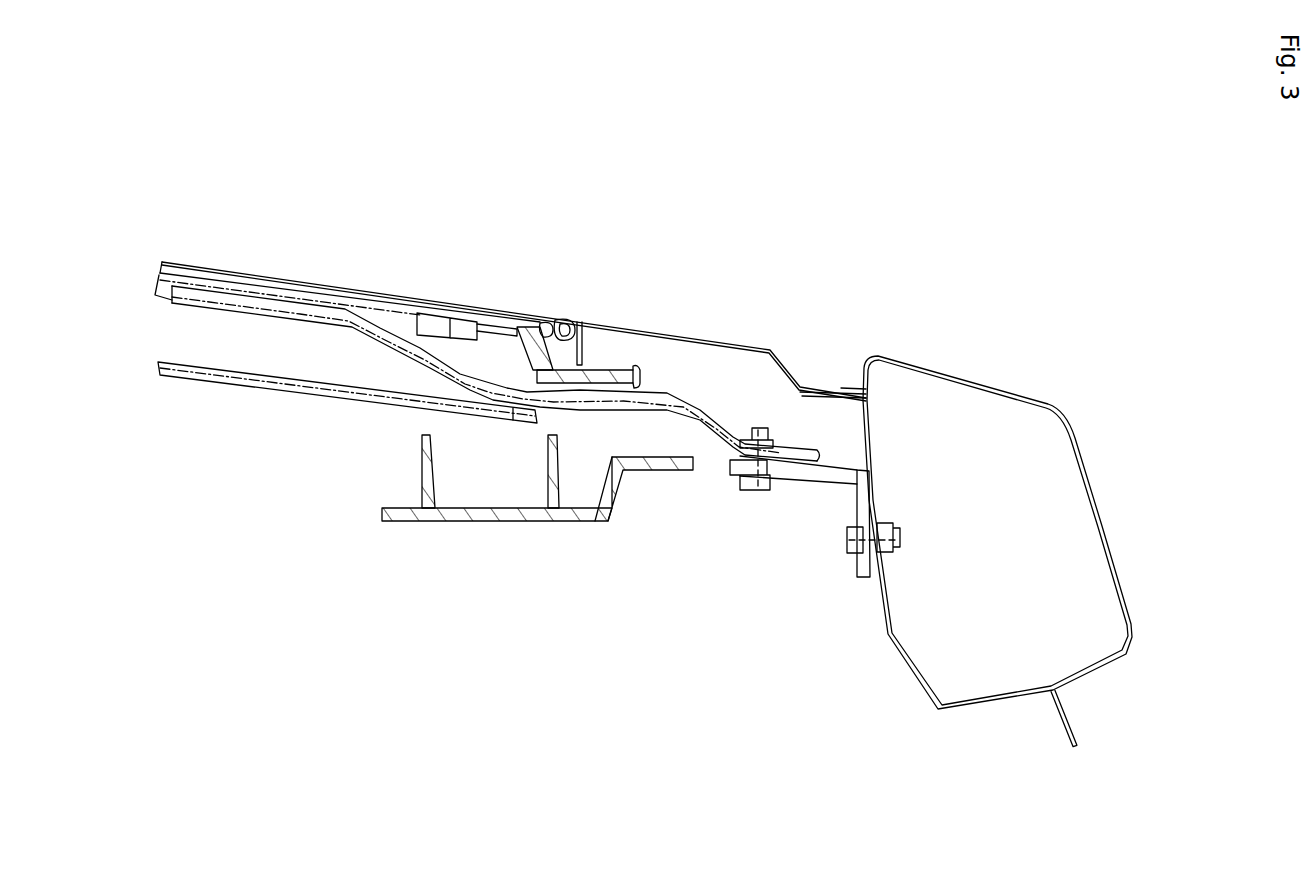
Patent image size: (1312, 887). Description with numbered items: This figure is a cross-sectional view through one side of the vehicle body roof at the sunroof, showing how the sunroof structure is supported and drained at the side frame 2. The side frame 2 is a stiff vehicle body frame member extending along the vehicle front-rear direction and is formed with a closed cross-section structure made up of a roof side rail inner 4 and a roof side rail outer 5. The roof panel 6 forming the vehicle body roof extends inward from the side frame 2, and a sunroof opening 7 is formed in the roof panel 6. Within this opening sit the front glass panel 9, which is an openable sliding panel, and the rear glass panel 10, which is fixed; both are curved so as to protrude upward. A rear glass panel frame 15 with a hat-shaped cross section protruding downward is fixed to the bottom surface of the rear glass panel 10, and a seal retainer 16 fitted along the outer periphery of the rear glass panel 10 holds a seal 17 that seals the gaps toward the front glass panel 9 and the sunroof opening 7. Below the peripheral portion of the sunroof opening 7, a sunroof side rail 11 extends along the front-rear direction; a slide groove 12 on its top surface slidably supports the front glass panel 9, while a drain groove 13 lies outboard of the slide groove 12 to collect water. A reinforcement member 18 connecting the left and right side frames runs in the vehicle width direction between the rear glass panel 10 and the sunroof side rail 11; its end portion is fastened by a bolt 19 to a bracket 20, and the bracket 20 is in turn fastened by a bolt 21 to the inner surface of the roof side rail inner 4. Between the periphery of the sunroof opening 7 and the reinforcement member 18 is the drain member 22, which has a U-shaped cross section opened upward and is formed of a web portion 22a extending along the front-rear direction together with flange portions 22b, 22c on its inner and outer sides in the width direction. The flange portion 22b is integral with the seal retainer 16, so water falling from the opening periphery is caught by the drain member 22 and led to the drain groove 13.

The side frame 2 is at (927, 368).
The roof side rail inner 4 is at (912, 676).
The roof side rail outer 5 is at (977, 390).
The roof panel 6 is at (735, 345).
The sunroof opening 7 is at (588, 348).
The front glass panel 9 is at (255, 382).
The rear glass panel 10 is at (305, 290).
The sunroof side rail 11 is at (497, 513).
The slide groove 12 is at (474, 498).
The drain groove 13 is at (582, 498).
The rear glass panel frame 15 is at (450, 315).
The seal retainer 16 is at (546, 320).
The seal 17 is at (568, 320).
The reinforcement member 18 is at (390, 357).
The bolt 19 is at (755, 490).
The bracket 20 is at (802, 480).
The bolt 21 is at (852, 548).
The drain member 22 is at (601, 372).
The web portion 22a is at (590, 385).
The flange portion 22b is at (530, 368).
The flange portion 22c is at (645, 371).